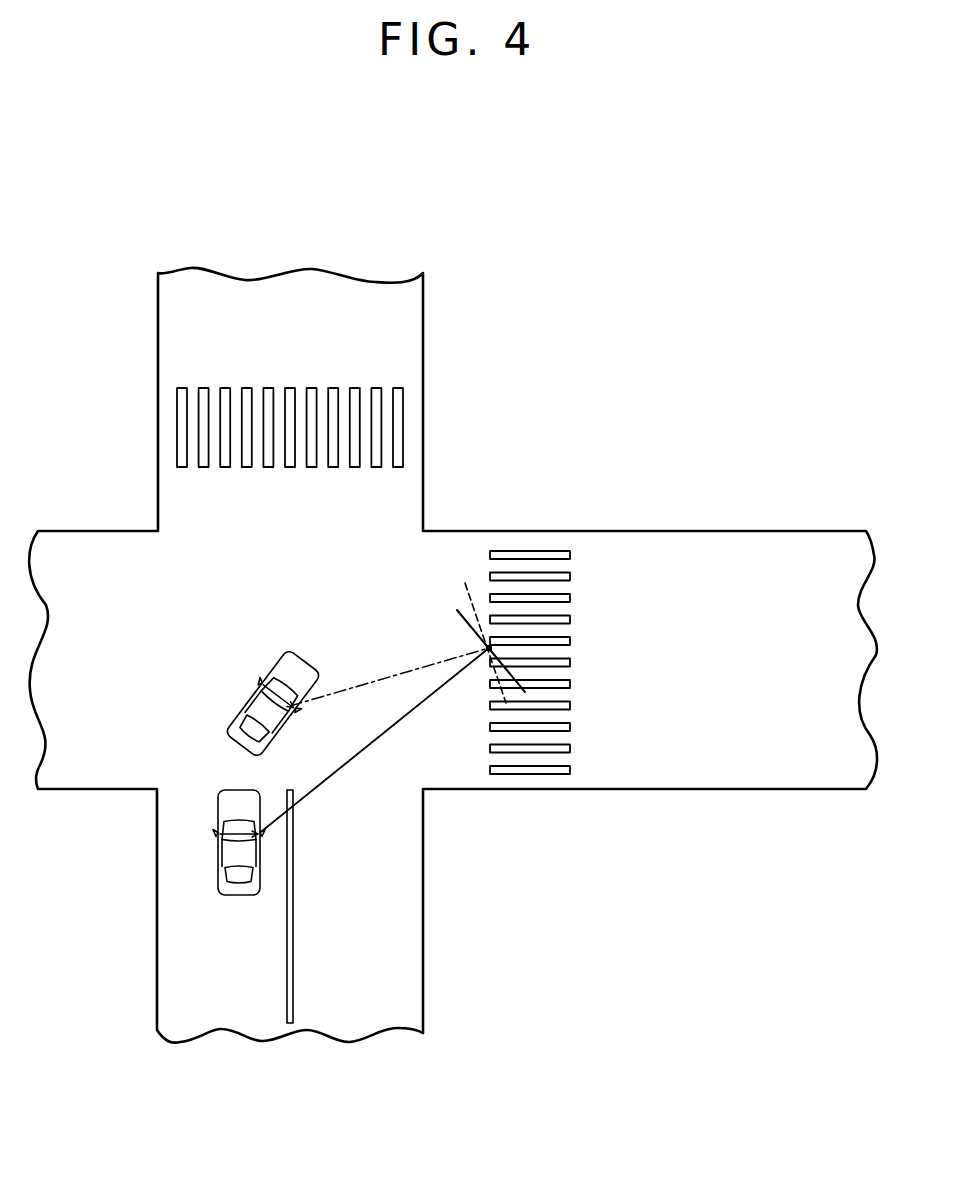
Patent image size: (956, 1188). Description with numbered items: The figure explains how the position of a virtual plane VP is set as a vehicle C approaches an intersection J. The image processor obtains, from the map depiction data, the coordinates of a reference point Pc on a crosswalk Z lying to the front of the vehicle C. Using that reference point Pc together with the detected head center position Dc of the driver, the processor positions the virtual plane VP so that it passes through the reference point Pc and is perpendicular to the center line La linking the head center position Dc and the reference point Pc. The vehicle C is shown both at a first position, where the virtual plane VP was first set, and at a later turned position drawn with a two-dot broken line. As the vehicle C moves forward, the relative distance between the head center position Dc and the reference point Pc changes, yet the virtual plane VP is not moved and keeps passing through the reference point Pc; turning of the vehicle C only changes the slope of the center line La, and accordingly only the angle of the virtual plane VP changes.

The intersection J is at (298, 589).
The crosswalk Z is at (567, 617).
The virtual plane VP is at (470, 603).
The reference point Pc is at (487, 657).
The vehicle C is at (230, 723).
The head center position Dc is at (263, 686).
The center line La is at (358, 688).